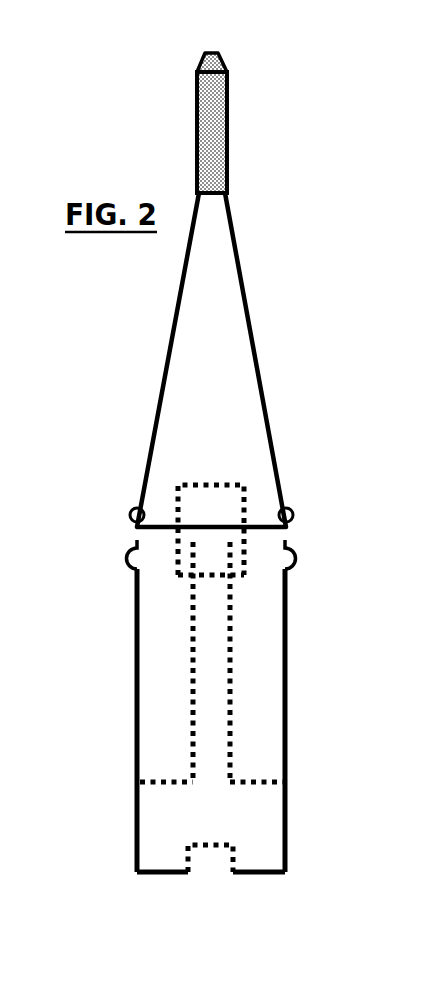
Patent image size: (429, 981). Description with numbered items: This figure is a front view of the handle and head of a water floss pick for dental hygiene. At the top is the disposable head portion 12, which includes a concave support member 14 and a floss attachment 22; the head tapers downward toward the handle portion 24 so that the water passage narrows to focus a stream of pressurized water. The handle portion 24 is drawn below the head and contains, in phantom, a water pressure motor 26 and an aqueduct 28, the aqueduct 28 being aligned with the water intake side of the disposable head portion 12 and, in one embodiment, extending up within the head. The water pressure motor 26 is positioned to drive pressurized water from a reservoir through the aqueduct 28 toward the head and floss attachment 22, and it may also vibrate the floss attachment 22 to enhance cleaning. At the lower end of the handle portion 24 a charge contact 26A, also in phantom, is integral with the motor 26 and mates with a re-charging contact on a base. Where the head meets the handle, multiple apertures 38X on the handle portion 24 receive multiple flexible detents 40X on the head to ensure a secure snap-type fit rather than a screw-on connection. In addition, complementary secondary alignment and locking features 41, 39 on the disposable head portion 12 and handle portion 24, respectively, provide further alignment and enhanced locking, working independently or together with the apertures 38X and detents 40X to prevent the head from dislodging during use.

The disposable head portion 12 is at (268, 325).
The concave support member 14 is at (226, 92).
The floss attachment 22 is at (226, 137).
The handle portion 24 is at (102, 692).
The water pressure motor 26 is at (270, 830).
The charge contact 26A is at (198, 848).
The aqueduct 28 is at (218, 683).
The multiple apertures 38X is at (128, 554).
The secondary alignment and locking feature of the handle 39 is at (243, 573).
The multiple detents 40X is at (130, 513).
The secondary alignment and locking feature of the head 41 is at (222, 485).